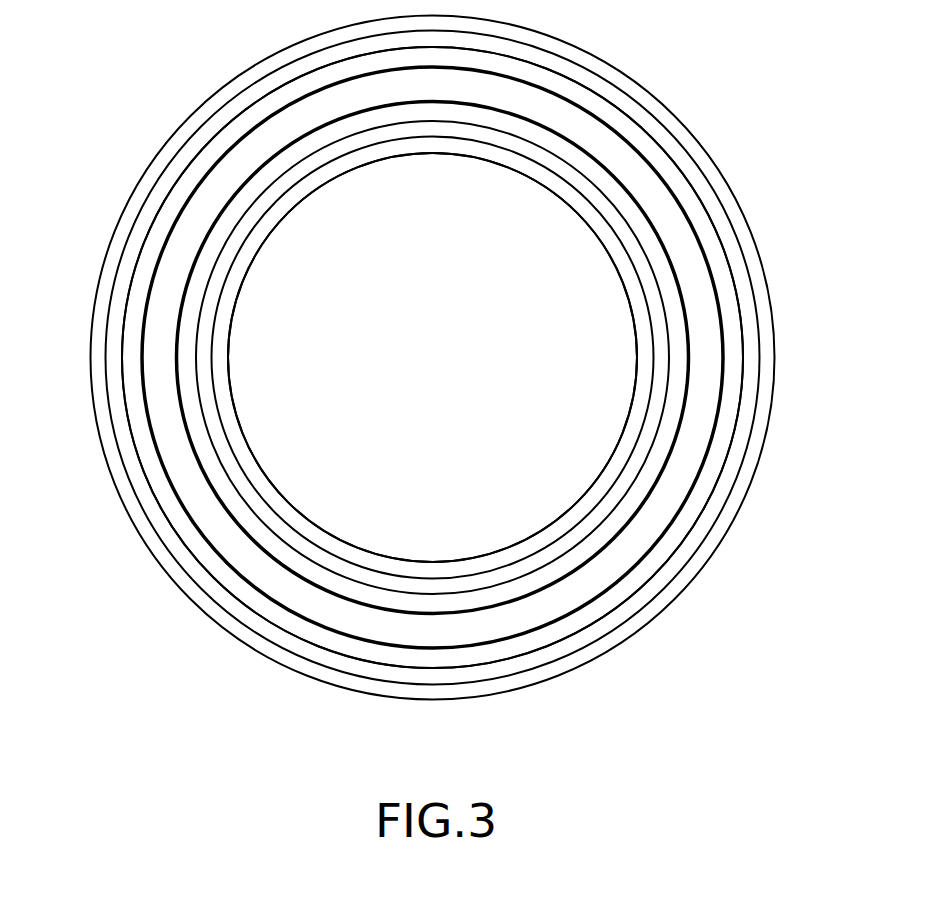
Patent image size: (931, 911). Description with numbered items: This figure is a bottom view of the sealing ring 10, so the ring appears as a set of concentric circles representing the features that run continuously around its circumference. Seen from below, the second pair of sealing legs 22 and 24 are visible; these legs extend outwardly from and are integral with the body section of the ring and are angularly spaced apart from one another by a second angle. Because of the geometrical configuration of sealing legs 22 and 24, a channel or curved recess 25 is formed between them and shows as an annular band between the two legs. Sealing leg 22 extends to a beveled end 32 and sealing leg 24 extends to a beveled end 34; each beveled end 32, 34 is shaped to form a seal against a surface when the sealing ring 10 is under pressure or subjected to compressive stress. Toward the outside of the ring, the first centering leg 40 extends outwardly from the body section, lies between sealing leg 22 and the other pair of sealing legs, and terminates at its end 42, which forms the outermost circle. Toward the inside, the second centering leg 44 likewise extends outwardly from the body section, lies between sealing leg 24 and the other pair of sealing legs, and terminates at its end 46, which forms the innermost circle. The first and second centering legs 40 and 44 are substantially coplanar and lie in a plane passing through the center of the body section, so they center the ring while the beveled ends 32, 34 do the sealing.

The sealing ring 10 is at (700, 142).
The sealing leg 22 is at (218, 148).
The sealing leg 24 is at (388, 115).
The curved recess 25 is at (295, 125).
The beveled end 32 is at (170, 175).
The beveled end 34 is at (482, 133).
The first centering leg 40 is at (132, 505).
The end 42 is at (168, 578).
The second centering leg 44 is at (235, 298).
The end 46 is at (250, 445).